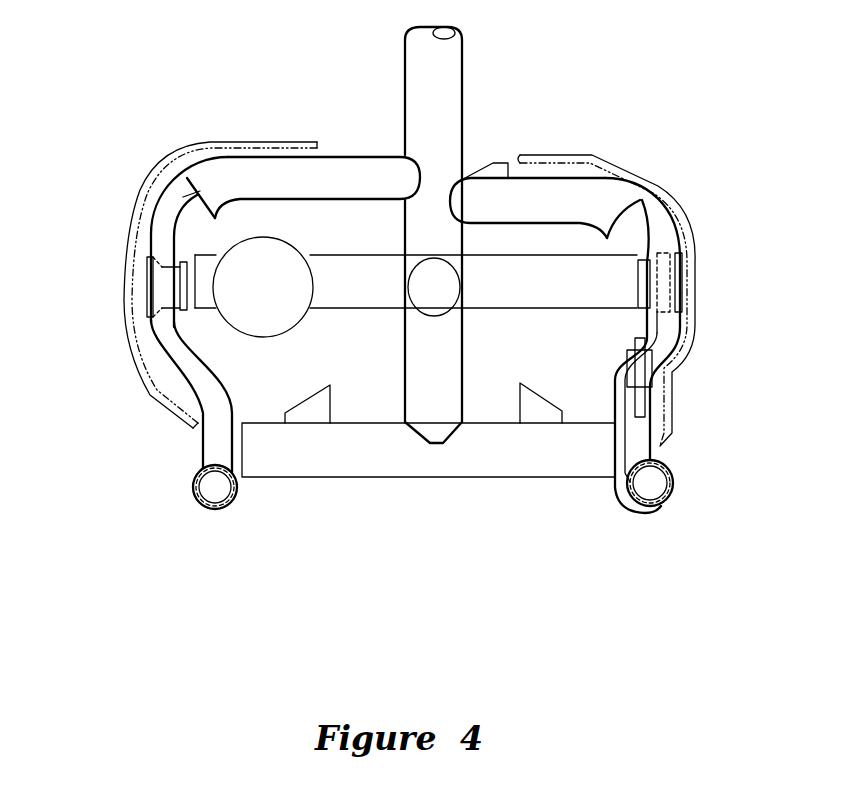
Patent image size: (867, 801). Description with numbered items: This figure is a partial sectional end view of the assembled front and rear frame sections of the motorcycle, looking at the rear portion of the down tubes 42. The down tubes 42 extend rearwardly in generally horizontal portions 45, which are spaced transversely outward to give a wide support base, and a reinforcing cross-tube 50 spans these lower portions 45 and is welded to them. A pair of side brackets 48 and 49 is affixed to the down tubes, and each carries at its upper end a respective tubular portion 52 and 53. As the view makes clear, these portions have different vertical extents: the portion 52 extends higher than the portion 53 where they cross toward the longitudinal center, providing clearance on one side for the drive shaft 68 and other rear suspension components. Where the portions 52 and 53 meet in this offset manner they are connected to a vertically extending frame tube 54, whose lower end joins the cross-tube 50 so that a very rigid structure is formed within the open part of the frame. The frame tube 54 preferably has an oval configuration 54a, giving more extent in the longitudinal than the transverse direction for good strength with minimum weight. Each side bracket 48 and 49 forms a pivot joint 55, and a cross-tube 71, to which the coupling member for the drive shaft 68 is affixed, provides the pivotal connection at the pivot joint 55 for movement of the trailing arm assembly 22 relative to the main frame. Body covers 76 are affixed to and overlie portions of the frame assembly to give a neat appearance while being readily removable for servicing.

The down tubes 42 is at (140, 491).
The tubular portion 52 is at (277, 168).
The tubular portion 53 is at (588, 198).
The frame tube 54 is at (450, 120).
The oval configuration 54a is at (448, 288).
The trailing arm assembly 22 is at (352, 322).
The drive shaft 68 is at (270, 338).
The cross-tube 71 is at (330, 255).
The pivot joint 55 is at (680, 295).
The side bracket 49 is at (662, 347).
The side bracket 48 is at (180, 381).
The horizontal portions of down tubes 45 is at (194, 503).
The reinforcing cross-tube 50 is at (507, 460).
The body covers 76 is at (145, 208).